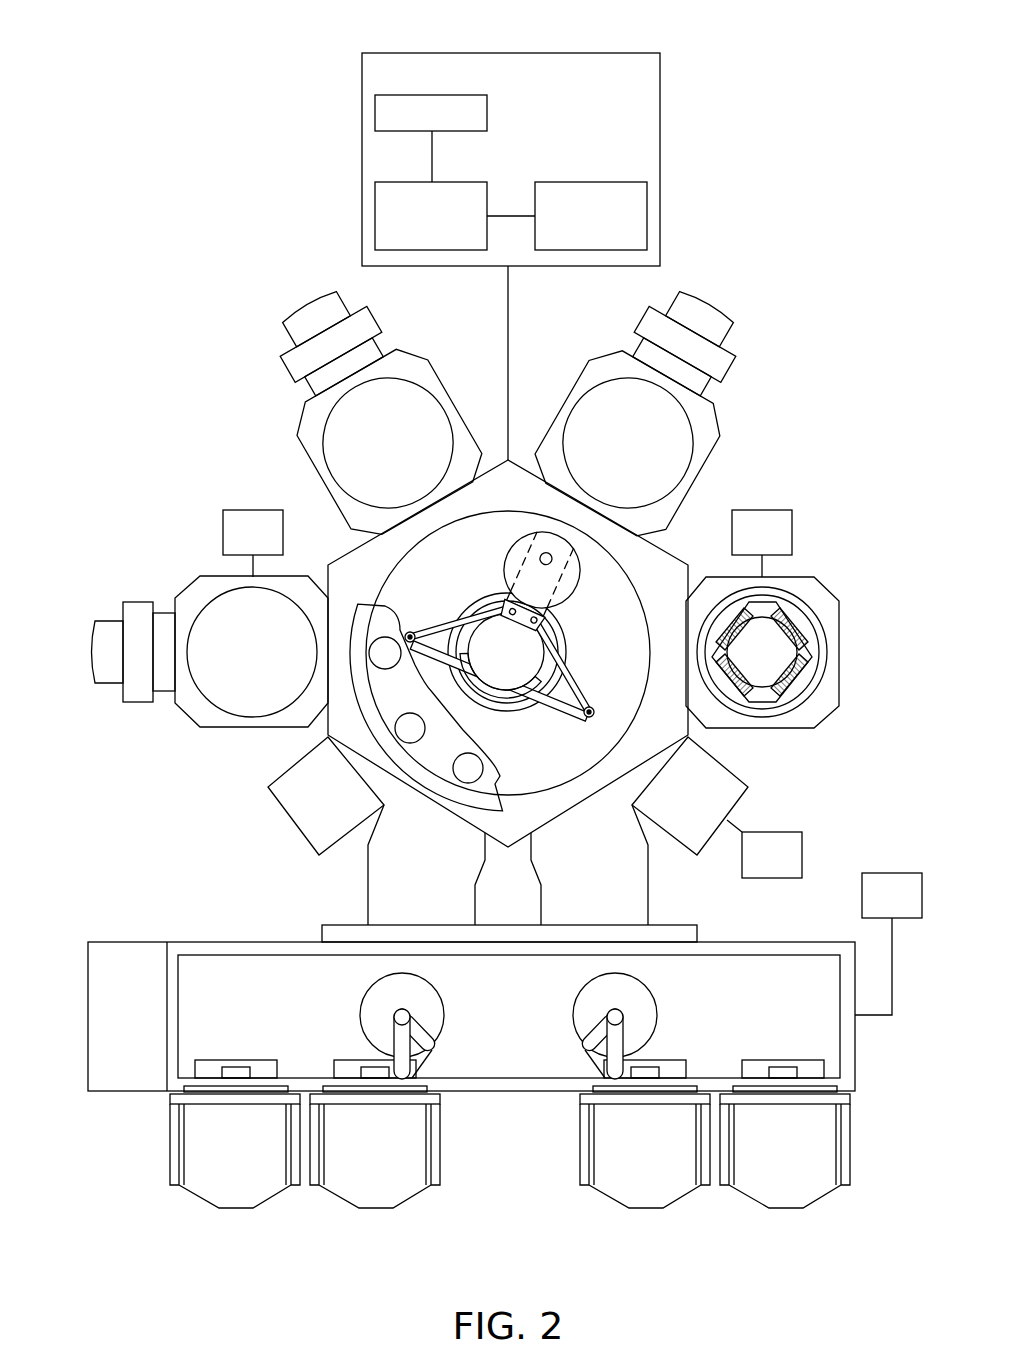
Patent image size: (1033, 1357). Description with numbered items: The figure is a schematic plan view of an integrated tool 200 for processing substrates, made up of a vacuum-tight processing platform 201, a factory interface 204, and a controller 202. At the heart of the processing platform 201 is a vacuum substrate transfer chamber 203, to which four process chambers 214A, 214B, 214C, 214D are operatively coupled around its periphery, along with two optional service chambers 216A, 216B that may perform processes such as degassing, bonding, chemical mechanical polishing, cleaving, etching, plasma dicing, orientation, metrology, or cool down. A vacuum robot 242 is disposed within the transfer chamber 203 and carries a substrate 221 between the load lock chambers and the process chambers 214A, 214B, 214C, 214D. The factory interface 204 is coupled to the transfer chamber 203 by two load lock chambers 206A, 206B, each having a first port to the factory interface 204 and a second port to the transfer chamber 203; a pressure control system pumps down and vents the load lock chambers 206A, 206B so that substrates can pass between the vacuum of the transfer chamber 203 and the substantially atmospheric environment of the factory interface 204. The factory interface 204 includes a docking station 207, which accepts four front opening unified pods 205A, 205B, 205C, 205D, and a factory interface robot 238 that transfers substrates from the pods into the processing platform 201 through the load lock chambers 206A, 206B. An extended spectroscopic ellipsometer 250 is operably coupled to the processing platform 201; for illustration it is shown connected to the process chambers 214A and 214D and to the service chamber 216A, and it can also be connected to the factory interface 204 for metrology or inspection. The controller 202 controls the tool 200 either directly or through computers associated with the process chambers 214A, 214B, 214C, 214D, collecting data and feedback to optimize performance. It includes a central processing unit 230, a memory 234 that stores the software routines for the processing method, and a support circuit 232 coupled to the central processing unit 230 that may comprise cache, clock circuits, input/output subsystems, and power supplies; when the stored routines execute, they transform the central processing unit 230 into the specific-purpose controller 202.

The tool 200 is at (777, 445).
The processing platform 201 is at (70, 278).
The controller 202 is at (617, 53).
The transfer chamber 203 is at (517, 759).
The factory interface 204 is at (70, 945).
The front opening unified pod 205A is at (787, 1208).
The front opening unified pod 205B is at (647, 1208).
The front opening unified pod 205C is at (377, 1208).
The front opening unified pod 205D is at (237, 1208).
The load lock chamber 206A is at (573, 888).
The load lock chamber 206B is at (394, 888).
The docking station 207 is at (722, 942).
The process chamber 214A is at (787, 729).
The process chamber 214B is at (604, 450).
The process chamber 214C is at (364, 450).
The process chamber 214D is at (229, 659).
The service chamber 216A is at (664, 803).
The service chamber 216B is at (301, 803).
The substrate 221 is at (512, 558).
The central processing unit 230 is at (375, 109).
The support circuit 232 is at (647, 200).
The memory 234 is at (375, 207).
The factory interface robot 238 is at (361, 1006).
The vacuum robot 242 is at (584, 683).
The extended spectroscopic ellipsometer 250 is at (235, 543).